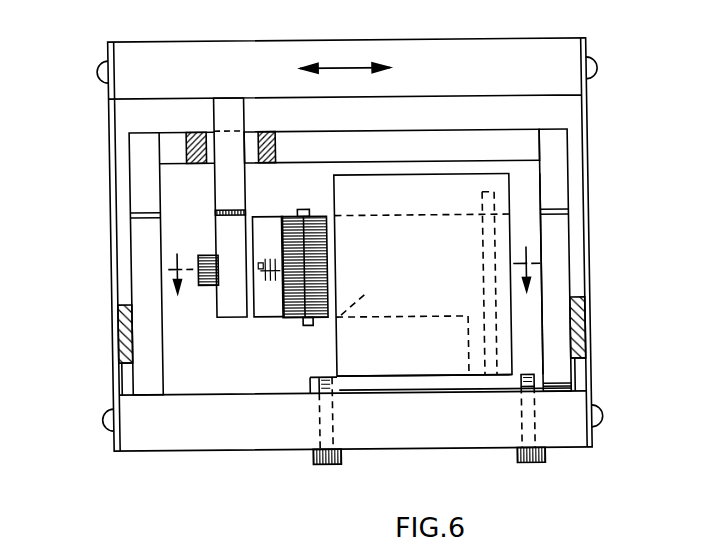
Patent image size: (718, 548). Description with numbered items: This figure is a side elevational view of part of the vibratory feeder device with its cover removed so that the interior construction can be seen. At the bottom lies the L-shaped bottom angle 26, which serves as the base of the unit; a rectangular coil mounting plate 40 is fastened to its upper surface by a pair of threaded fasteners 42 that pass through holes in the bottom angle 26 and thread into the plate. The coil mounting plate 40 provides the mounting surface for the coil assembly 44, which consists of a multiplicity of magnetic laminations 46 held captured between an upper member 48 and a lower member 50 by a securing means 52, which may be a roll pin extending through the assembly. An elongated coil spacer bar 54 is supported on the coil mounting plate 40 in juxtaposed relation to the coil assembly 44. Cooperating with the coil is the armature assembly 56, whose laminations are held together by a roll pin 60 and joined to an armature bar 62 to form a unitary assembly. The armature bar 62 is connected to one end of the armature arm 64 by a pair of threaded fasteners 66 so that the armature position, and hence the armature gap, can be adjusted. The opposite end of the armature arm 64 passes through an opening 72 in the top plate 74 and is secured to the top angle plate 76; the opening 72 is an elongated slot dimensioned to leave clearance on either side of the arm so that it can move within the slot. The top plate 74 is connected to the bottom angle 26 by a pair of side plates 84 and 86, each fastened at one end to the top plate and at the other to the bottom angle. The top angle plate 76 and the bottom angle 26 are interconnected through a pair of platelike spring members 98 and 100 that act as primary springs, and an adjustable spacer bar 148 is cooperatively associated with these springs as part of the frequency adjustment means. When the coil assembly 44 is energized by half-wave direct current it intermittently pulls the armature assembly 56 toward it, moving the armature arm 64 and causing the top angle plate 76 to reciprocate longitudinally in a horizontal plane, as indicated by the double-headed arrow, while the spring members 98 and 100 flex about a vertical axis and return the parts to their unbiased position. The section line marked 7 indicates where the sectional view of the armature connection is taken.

The top angle plate 76 is at (366, 38).
The bottom angle 26 is at (243, 440).
The side plate 86 is at (131, 143).
The spring member 100 is at (111, 200).
The spring member 98 is at (590, 248).
The top plate 74 is at (393, 128).
The opening 72 is at (208, 140).
The armature arm 64 is at (230, 318).
The side plate 84 is at (556, 146).
The coil assembly 44 is at (513, 192).
The adjustable spacer bar 148 is at (118, 333).
The upper member 48 is at (357, 181).
The lower member 50 is at (336, 355).
The securing means 52 is at (483, 193).
The coil spacer bar 54 is at (467, 348).
The magnetic laminations 46 is at (334, 329).
The armature bar 62 is at (272, 318).
The armature assembly 56 is at (288, 209).
The roll pin 60 is at (303, 209).
The threaded fasteners 66 is at (203, 254).
The coil mounting plate 40 is at (308, 384).
The threaded fasteners 42 is at (341, 456).
The section line 7- 7 is at (354, 283).